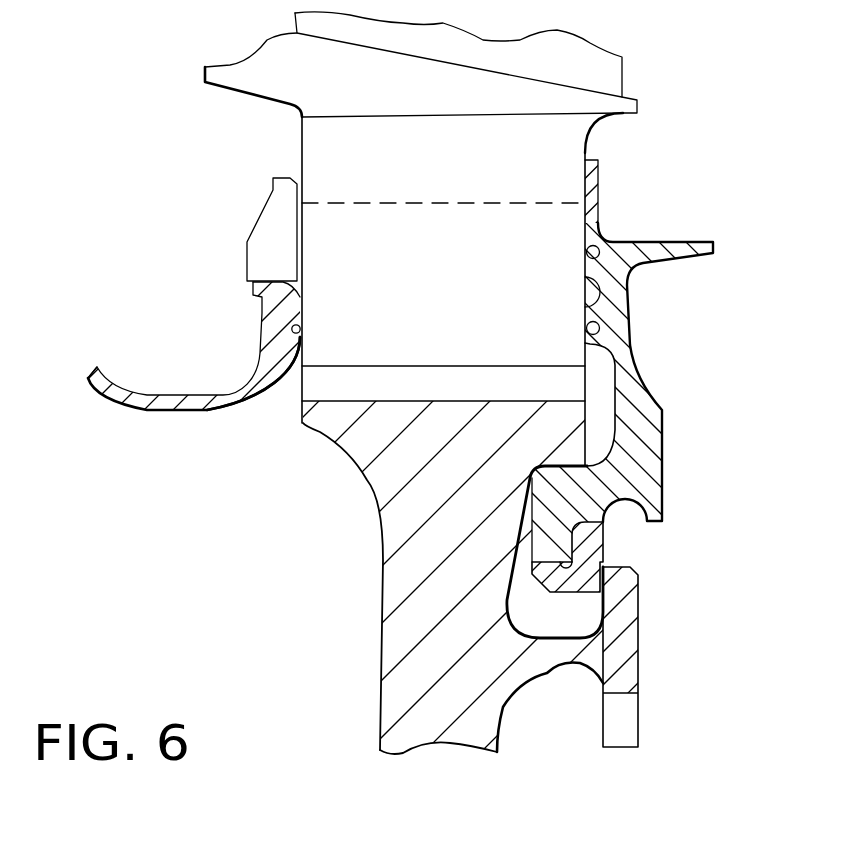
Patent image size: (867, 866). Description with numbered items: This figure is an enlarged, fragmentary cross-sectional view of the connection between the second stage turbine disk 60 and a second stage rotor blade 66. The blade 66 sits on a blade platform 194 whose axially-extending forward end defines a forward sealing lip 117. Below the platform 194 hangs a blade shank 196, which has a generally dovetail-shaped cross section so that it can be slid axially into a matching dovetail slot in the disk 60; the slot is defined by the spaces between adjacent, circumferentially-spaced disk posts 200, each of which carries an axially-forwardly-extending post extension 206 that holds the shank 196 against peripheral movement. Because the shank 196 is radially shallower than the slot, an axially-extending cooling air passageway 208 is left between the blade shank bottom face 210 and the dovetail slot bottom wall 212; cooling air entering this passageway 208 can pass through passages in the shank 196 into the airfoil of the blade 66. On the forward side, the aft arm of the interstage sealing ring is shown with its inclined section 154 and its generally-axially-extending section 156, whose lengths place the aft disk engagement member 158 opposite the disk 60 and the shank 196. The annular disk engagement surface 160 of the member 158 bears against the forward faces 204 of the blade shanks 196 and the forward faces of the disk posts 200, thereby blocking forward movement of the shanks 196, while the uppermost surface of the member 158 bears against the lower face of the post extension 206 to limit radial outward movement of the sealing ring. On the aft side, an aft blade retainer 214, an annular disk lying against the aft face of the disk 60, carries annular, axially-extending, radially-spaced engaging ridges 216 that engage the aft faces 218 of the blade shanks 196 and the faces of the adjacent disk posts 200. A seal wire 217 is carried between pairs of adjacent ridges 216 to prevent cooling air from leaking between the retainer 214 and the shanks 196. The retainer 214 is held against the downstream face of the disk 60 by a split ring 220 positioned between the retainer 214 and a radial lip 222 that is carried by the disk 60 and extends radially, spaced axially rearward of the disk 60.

The second stage turbine disk 60 is at (420, 723).
The second stage rotor blades 66 is at (457, 57).
The forward sealing lip 117 is at (218, 76).
The inclined section 154 is at (112, 383).
The generally-axially-extending section 156 is at (165, 395).
The aft disk engagement member 158 is at (258, 302).
The disk engagement surface 160 is at (303, 307).
The blade platform 194 is at (463, 90).
The blade shank 196 is at (533, 138).
The disk posts 200 is at (400, 230).
The forward faces 204 is at (298, 139).
The post extension 206 is at (268, 233).
The cooling air passageway 208 is at (310, 387).
The blade shank bottom face 210 is at (330, 368).
The dovetail slot bottom wall 212 is at (420, 400).
The aft blade retainer 214 is at (648, 423).
The engaging ridges 216 is at (585, 275).
The seal wire 217 is at (586, 253).
The aft faces 218 is at (598, 178).
The split ring 220 is at (593, 550).
The radial lip 222 is at (623, 587).